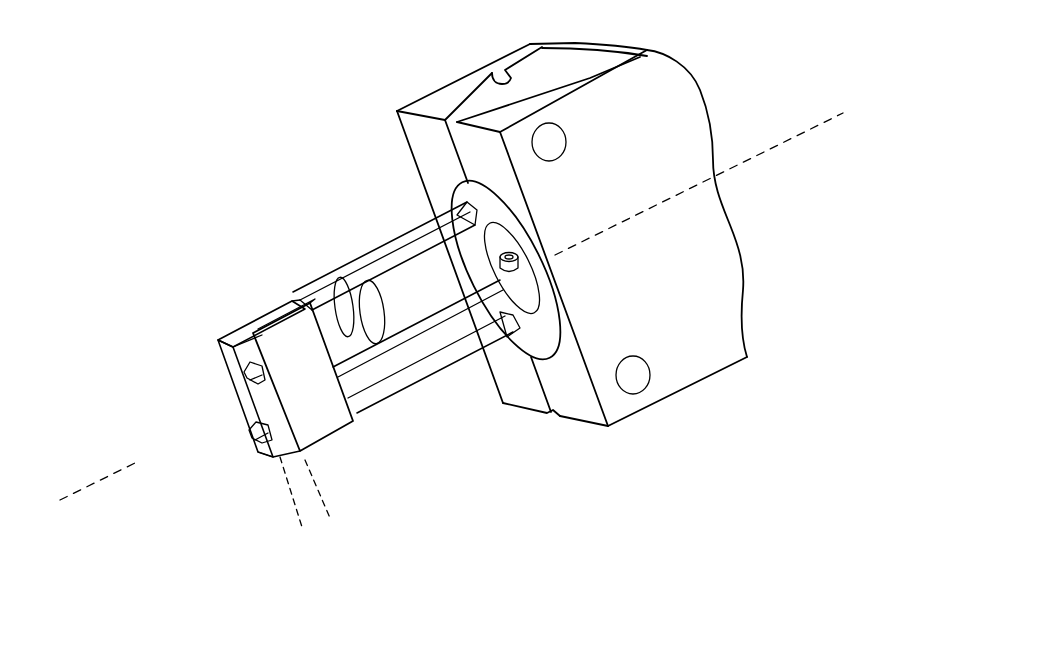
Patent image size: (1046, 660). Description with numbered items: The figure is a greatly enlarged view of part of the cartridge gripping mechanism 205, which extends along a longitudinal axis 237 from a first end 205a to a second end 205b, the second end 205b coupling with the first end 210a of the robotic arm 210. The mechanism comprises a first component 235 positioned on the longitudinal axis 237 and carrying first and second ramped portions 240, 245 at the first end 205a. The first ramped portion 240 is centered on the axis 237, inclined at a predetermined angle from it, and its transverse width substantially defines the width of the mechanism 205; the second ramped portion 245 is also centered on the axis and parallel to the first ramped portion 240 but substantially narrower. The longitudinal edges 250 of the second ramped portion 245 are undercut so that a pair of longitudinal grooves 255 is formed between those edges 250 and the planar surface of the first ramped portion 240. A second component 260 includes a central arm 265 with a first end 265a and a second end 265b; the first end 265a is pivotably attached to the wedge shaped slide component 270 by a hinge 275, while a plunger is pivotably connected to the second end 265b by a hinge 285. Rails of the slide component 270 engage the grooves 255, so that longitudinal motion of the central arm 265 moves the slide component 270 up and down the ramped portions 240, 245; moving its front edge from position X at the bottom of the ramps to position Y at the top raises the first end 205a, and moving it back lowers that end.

The cartridge gripping mechanism 205 is at (224, 158).
The first end of gripping mechanism 205a is at (189, 313).
The second end of gripping mechanism 205b is at (393, 158).
The robotic arm 210 is at (790, 301).
The first end of robotic arm 210a is at (702, 398).
The first component 235 is at (341, 290).
The longitudinal axis 237 is at (745, 172).
The first ramped portion 240 is at (232, 340).
The second ramped portion 245 is at (233, 420).
The longitudinal edges 250 is at (262, 403).
The longitudinal grooves 255 is at (240, 372).
The second component 260 is at (443, 436).
The central arm 265 is at (440, 313).
The first end of central arm 265a is at (383, 283).
The second end of central arm 265b is at (532, 231).
The slide component 270 is at (340, 443).
The hinge 275 is at (333, 288).
The hinge 285 is at (545, 282).